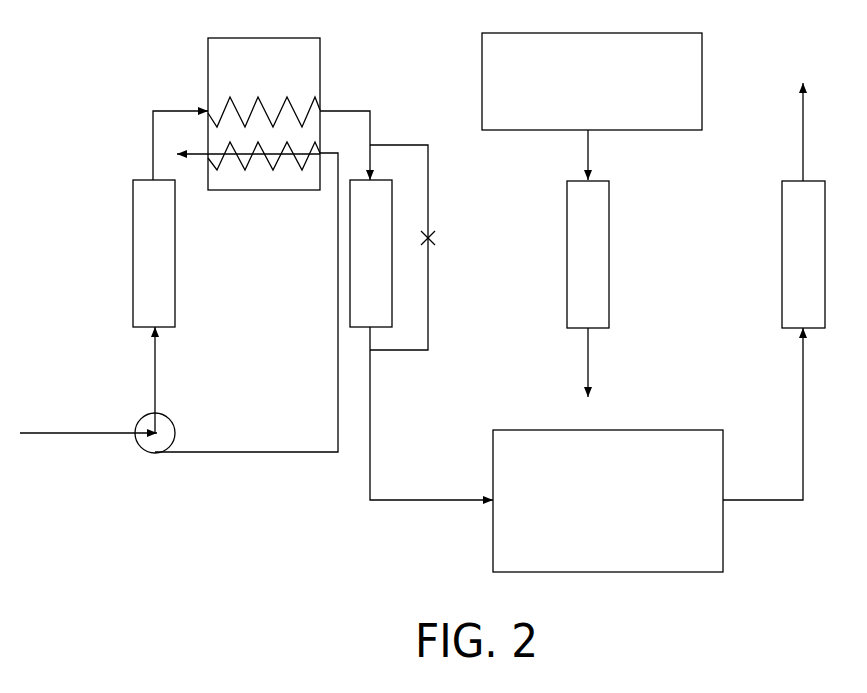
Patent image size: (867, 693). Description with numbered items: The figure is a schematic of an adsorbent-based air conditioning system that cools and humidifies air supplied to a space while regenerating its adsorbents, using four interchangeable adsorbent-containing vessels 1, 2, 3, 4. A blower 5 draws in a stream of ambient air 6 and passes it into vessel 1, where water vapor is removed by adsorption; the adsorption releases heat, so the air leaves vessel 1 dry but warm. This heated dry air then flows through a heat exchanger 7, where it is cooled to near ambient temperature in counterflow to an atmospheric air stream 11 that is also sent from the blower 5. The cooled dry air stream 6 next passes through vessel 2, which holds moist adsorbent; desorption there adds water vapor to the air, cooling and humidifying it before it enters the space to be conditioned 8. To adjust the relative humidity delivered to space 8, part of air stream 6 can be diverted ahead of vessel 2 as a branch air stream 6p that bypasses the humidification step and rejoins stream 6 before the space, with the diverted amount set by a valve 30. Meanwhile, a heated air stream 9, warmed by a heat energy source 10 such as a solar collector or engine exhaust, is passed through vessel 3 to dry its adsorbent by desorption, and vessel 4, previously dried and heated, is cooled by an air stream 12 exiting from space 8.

The adsorbent-containing vessel 1 is at (154, 253).
The adsorbent-containing vessel 2 is at (371, 253).
The adsorbent-containing vessel 3 is at (588, 289).
The adsorbent-containing vessel 4 is at (803, 205).
The blower 5 is at (175, 425).
The air stream 6 is at (155, 375).
The branch air stream 6p is at (428, 172).
The heat exchanger 7 is at (307, 58).
The space to be conditioned 8 is at (663, 565).
The heated air stream 9 is at (588, 152).
The heat energy source 10 is at (540, 33).
The atmospheric air stream 11 is at (338, 371).
The air stream 12 is at (803, 462).
The valve 30 is at (435, 243).